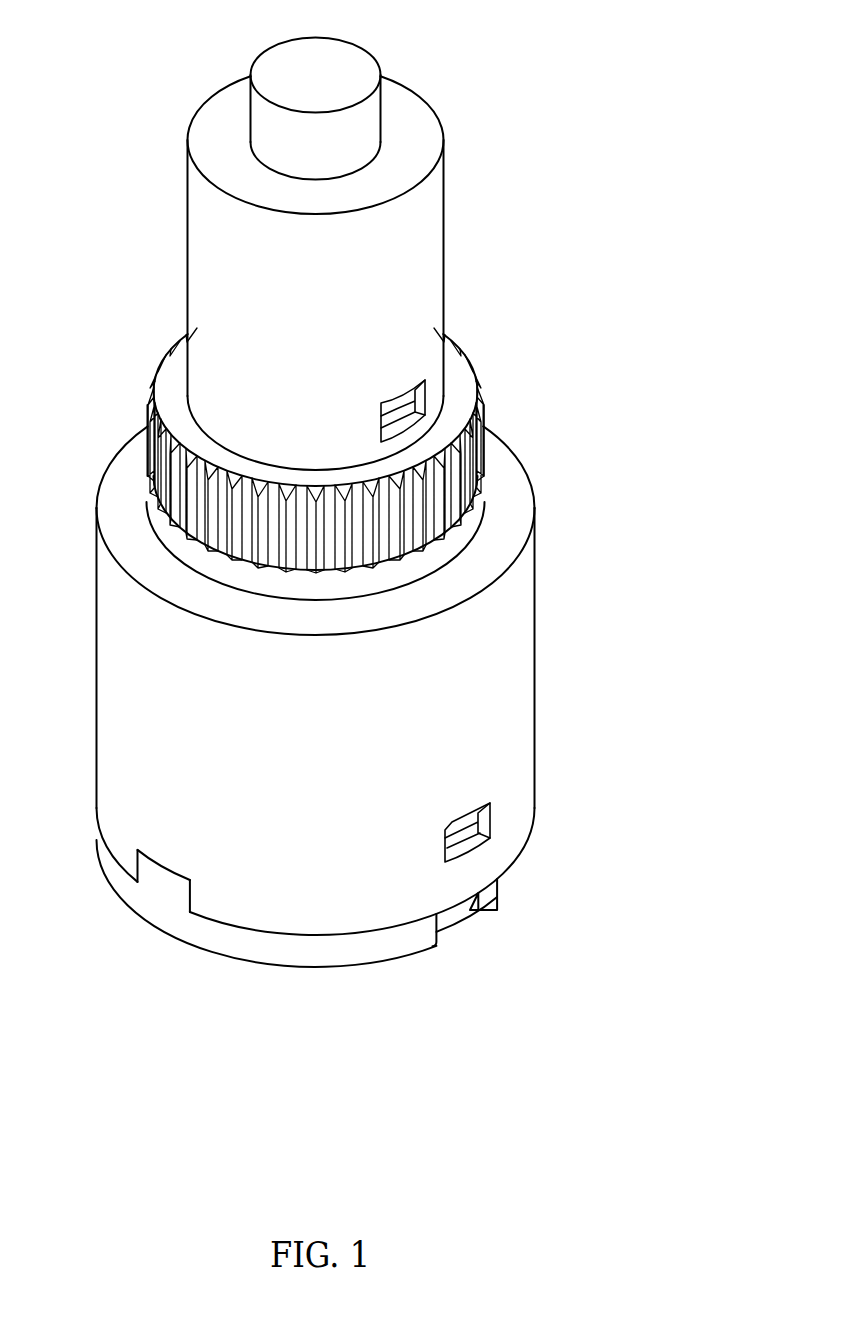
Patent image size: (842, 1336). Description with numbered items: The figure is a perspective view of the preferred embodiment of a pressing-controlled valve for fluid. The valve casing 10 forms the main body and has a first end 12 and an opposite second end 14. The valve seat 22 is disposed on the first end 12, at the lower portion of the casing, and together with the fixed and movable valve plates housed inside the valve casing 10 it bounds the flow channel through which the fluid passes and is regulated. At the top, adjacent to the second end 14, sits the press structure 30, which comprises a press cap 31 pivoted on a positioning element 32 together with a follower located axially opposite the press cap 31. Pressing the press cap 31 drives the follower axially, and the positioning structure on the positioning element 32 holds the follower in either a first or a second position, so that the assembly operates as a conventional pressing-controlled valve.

The valve casing 10 is at (536, 677).
The first end 12 is at (349, 933).
The second end 14 is at (458, 398).
The valve seat 22 is at (157, 898).
The press structure 30 is at (317, 235).
The press cap 31 is at (363, 50).
The positioning element 32 is at (445, 278).